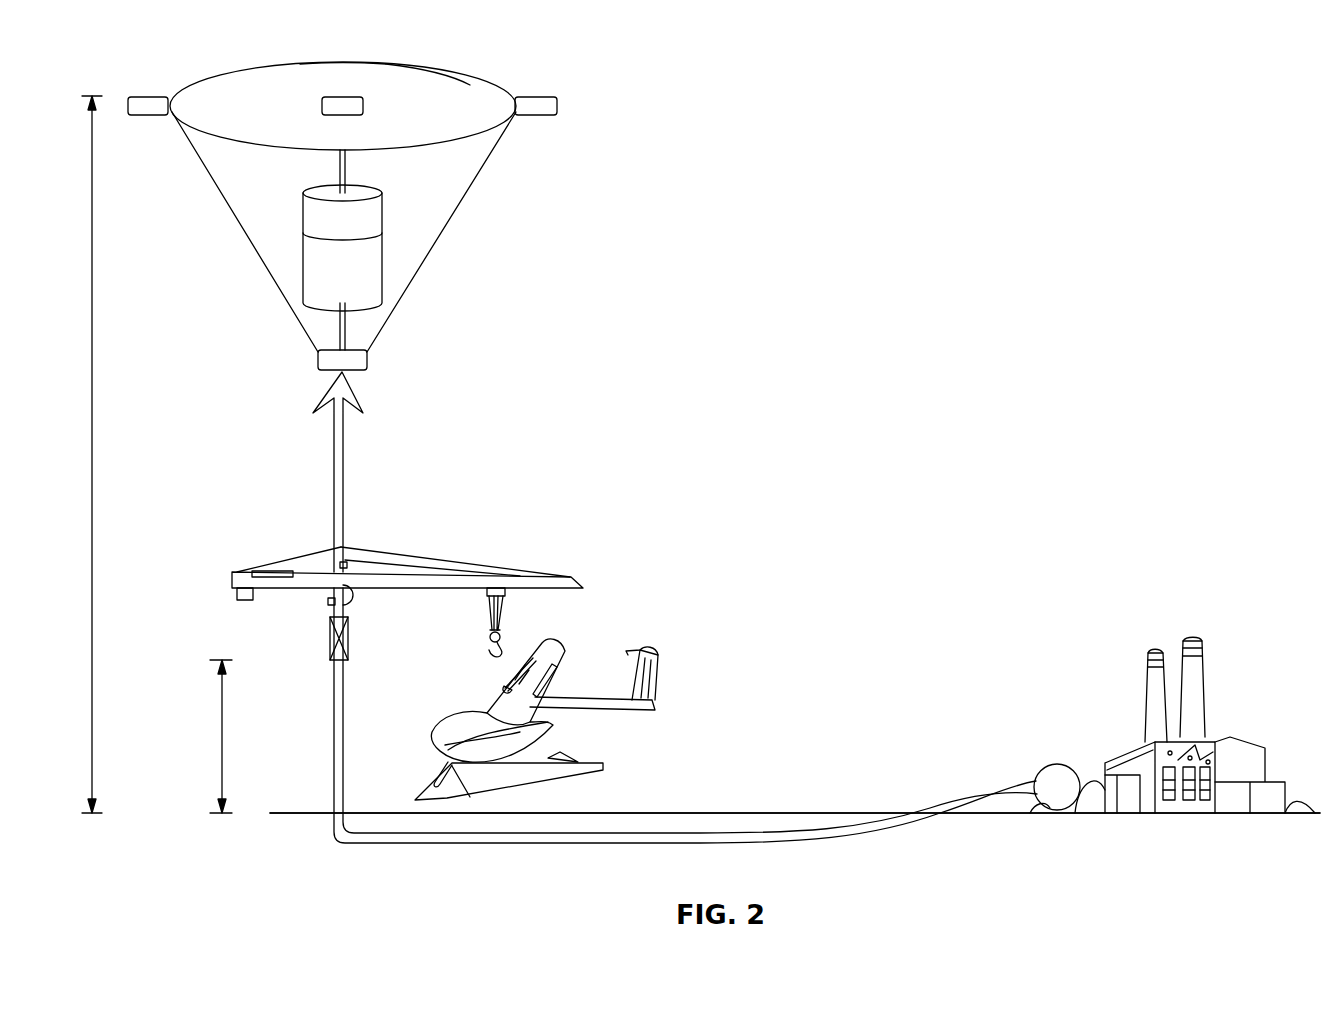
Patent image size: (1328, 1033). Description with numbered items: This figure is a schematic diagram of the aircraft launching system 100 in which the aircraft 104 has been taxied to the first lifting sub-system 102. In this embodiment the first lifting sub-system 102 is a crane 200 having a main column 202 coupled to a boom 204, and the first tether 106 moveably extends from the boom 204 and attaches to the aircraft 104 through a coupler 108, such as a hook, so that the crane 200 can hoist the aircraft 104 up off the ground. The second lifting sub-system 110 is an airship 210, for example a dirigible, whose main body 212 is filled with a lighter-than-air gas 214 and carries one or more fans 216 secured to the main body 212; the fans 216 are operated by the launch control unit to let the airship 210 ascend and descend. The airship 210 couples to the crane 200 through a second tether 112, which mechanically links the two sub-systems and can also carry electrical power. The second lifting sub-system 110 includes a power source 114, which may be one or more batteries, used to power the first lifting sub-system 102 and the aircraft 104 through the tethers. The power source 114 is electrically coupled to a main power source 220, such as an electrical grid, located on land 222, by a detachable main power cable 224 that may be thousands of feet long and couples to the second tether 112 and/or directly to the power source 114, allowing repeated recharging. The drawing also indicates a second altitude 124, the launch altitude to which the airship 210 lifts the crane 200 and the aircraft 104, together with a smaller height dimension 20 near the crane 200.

The aircraft launching system 100 is at (839, 127).
The second lifting sub-system 110 is at (486, 61).
The airship 210 is at (230, 72).
The main body 212 is at (365, 62).
The lighter-than-air gas 214 is at (413, 98).
The fans 216 is at (343, 96).
The power source 114 is at (383, 251).
The second tether 112 is at (344, 458).
The second altitude 124 is at (100, 468).
The first lifting sub-system 102 is at (548, 565).
The crane 200 is at (262, 570).
The boom 204 is at (470, 570).
The main column 202 is at (330, 640).
The first tether 106 is at (505, 612).
The coupler 108 is at (508, 652).
The aircraft 104 is at (660, 672).
The platform height 20 is at (220, 742).
The main power source 220 is at (1250, 741).
The land 222 is at (862, 812).
The detachable main power cable 224 is at (783, 838).